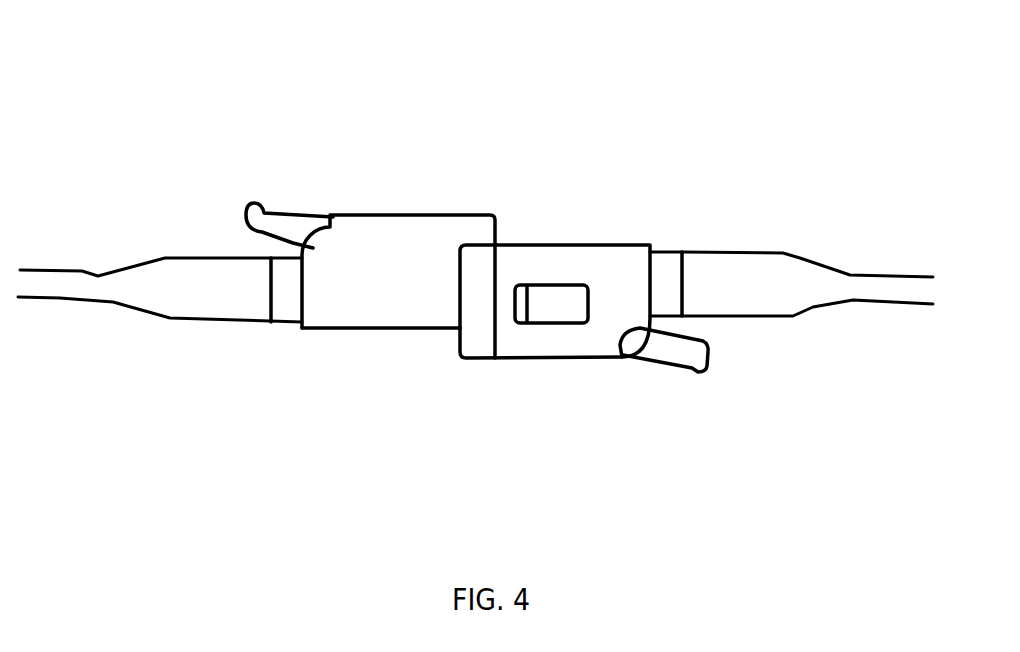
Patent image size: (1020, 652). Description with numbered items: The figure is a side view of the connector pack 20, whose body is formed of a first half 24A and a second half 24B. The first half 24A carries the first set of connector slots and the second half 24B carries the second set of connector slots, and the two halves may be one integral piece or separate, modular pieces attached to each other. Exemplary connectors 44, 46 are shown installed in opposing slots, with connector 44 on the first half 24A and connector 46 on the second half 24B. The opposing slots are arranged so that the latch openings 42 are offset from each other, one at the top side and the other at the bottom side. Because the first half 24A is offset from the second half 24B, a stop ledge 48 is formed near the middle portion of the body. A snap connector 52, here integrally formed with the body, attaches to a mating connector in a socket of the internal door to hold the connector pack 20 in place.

The connector pack 20 is at (555, 73).
The first half 24A is at (368, 224).
The second half 24B is at (568, 260).
The latch openings 42 is at (327, 215).
The connector 44 is at (215, 307).
The connector 46 is at (663, 280).
The stop ledges 48 is at (500, 232).
The snap connectors 52 is at (543, 308).